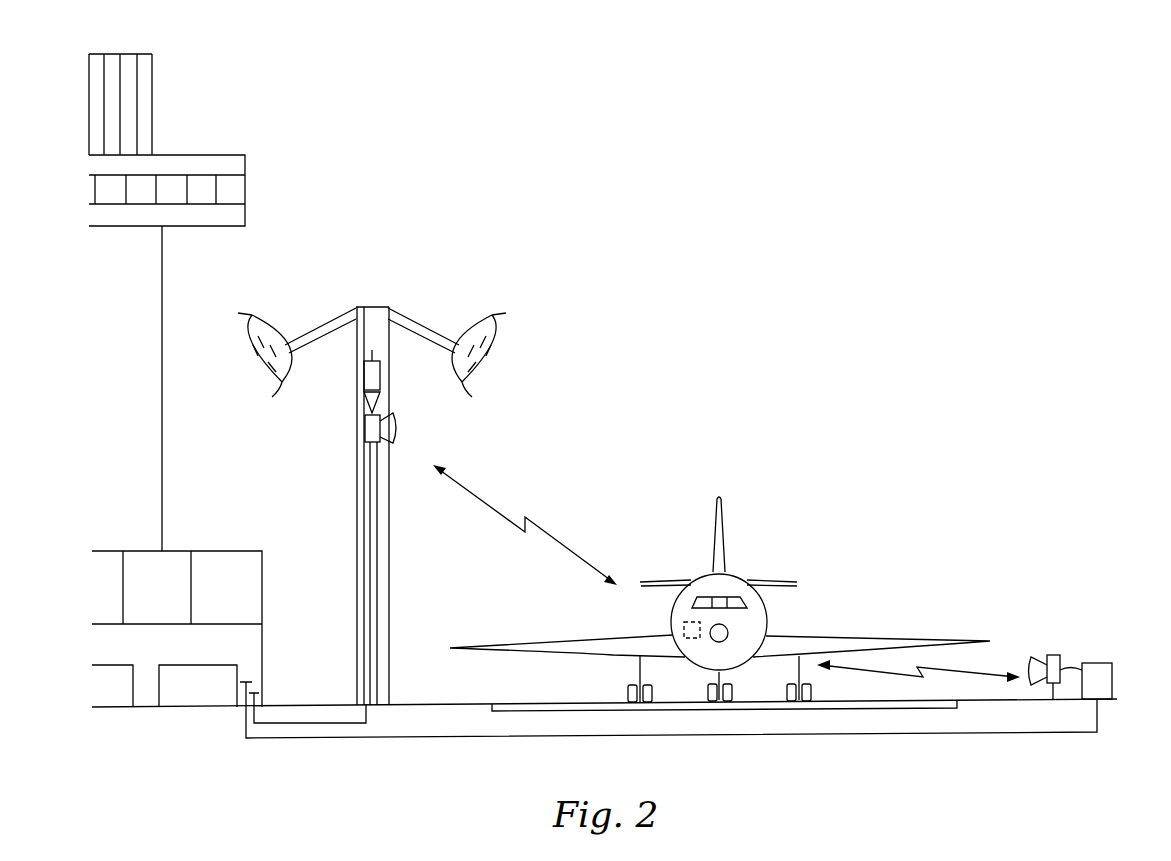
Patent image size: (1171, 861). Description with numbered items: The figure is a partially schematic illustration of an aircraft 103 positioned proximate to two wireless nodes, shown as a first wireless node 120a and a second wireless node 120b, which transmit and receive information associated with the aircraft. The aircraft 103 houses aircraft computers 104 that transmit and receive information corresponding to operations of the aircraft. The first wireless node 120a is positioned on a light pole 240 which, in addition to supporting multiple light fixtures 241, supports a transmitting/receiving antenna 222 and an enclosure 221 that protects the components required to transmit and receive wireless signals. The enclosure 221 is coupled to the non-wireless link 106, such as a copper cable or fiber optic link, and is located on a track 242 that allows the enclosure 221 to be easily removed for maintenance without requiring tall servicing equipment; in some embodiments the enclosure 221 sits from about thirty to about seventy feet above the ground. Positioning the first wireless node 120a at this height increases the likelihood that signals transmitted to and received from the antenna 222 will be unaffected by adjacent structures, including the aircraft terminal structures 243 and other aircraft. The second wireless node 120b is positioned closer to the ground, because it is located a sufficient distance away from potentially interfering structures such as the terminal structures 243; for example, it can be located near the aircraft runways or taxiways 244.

The aircraft 103 is at (720, 599).
The aircraft computers 104 is at (688, 618).
The non-wireless links 106 is at (363, 513).
The first wireless node 120a is at (372, 354).
The second wireless node 120b is at (1116, 712).
The enclosure 221 is at (383, 367).
The transmitting/receiving antenna 222 is at (395, 430).
The light pole 240 is at (390, 603).
The light fixtures 241 is at (289, 383).
The track 242 is at (377, 541).
The aircraft terminal structures 243 is at (186, 512).
The runways or taxiways 244 is at (514, 713).